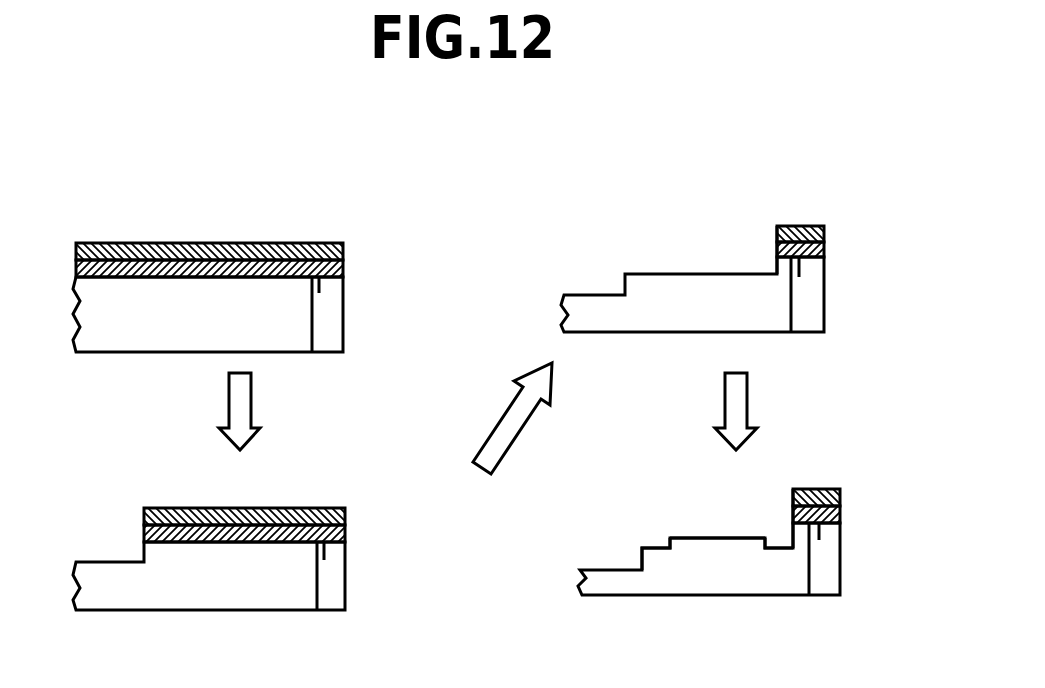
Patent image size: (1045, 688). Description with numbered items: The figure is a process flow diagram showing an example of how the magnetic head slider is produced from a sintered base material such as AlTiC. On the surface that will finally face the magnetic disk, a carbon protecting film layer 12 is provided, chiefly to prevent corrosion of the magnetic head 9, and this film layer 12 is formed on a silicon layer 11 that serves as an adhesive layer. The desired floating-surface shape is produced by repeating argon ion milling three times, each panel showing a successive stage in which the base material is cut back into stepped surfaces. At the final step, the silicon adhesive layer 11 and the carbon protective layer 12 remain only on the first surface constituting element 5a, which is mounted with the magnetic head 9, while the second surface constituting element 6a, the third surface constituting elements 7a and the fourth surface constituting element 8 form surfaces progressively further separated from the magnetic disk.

The carbon protecting film layer 12 is at (344, 243).
The silicon layer 11 is at (344, 264).
The magnetic head 9 is at (320, 289).
The first surface constituting element 5a is at (791, 226).
The second surface constituting element 6a is at (722, 538).
The third surface constituting element 7a is at (652, 548).
The fourth surface constituting element 8 is at (592, 570).